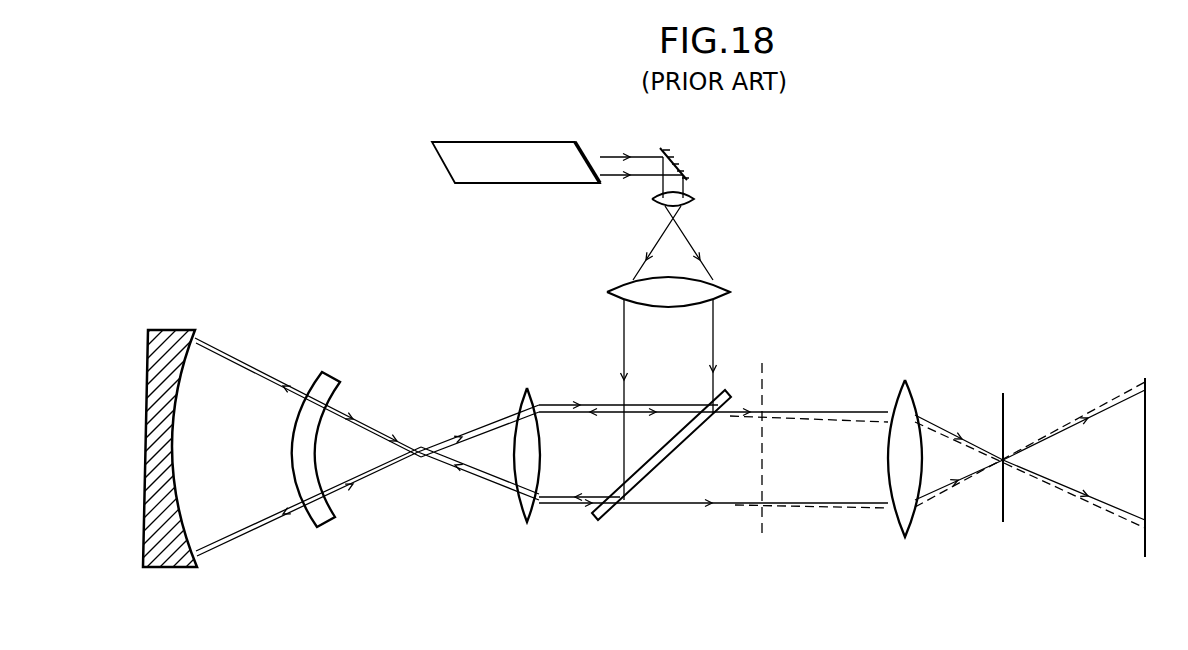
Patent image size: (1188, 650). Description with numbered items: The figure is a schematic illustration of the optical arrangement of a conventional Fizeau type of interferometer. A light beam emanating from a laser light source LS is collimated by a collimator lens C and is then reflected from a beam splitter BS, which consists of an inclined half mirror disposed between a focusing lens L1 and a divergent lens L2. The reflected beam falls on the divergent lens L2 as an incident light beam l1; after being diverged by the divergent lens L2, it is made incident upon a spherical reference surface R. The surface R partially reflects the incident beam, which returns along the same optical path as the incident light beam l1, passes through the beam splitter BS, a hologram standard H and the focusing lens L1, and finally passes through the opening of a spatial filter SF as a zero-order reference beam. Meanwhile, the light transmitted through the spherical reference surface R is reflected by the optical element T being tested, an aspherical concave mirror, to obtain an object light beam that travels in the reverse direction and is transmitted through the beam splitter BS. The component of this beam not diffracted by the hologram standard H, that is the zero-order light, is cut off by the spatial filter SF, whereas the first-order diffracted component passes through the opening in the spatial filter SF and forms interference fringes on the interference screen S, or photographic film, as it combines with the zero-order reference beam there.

The light source LS is at (566, 146).
The collimator lens C is at (729, 291).
The beam splitter BS is at (607, 518).
The incident light beam l1 is at (550, 408).
The hologram standard H is at (766, 372).
The divergent lens L2 is at (527, 480).
The optical element being tested T is at (198, 346).
The spherical reference surface R is at (343, 385).
The focusing lens L1 is at (908, 392).
The spatial filter SF is at (1008, 402).
The interference screen S is at (1148, 385).